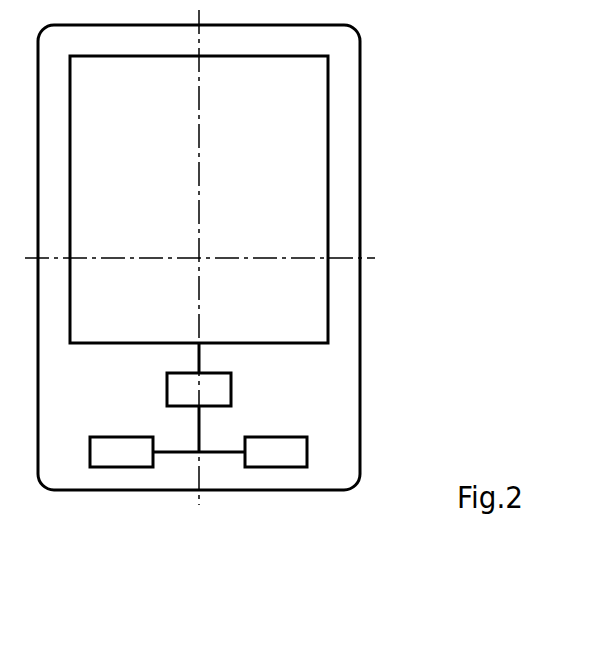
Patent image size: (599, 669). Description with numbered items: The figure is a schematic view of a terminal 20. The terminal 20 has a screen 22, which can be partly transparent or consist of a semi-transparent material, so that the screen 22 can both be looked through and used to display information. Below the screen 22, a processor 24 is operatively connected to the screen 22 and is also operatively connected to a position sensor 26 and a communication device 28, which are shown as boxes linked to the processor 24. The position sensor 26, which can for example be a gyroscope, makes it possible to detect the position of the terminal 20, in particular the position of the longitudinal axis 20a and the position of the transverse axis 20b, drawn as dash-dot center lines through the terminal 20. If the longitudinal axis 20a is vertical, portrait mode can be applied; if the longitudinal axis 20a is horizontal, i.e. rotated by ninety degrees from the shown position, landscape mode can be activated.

The terminal 20 is at (389, 135).
The longitudinal axis 20a is at (197, 152).
The transverse axis 20b is at (137, 255).
The screen 22 is at (279, 134).
The processor 24 is at (232, 383).
The position sensor 26 is at (118, 469).
The communication device 28 is at (279, 469).